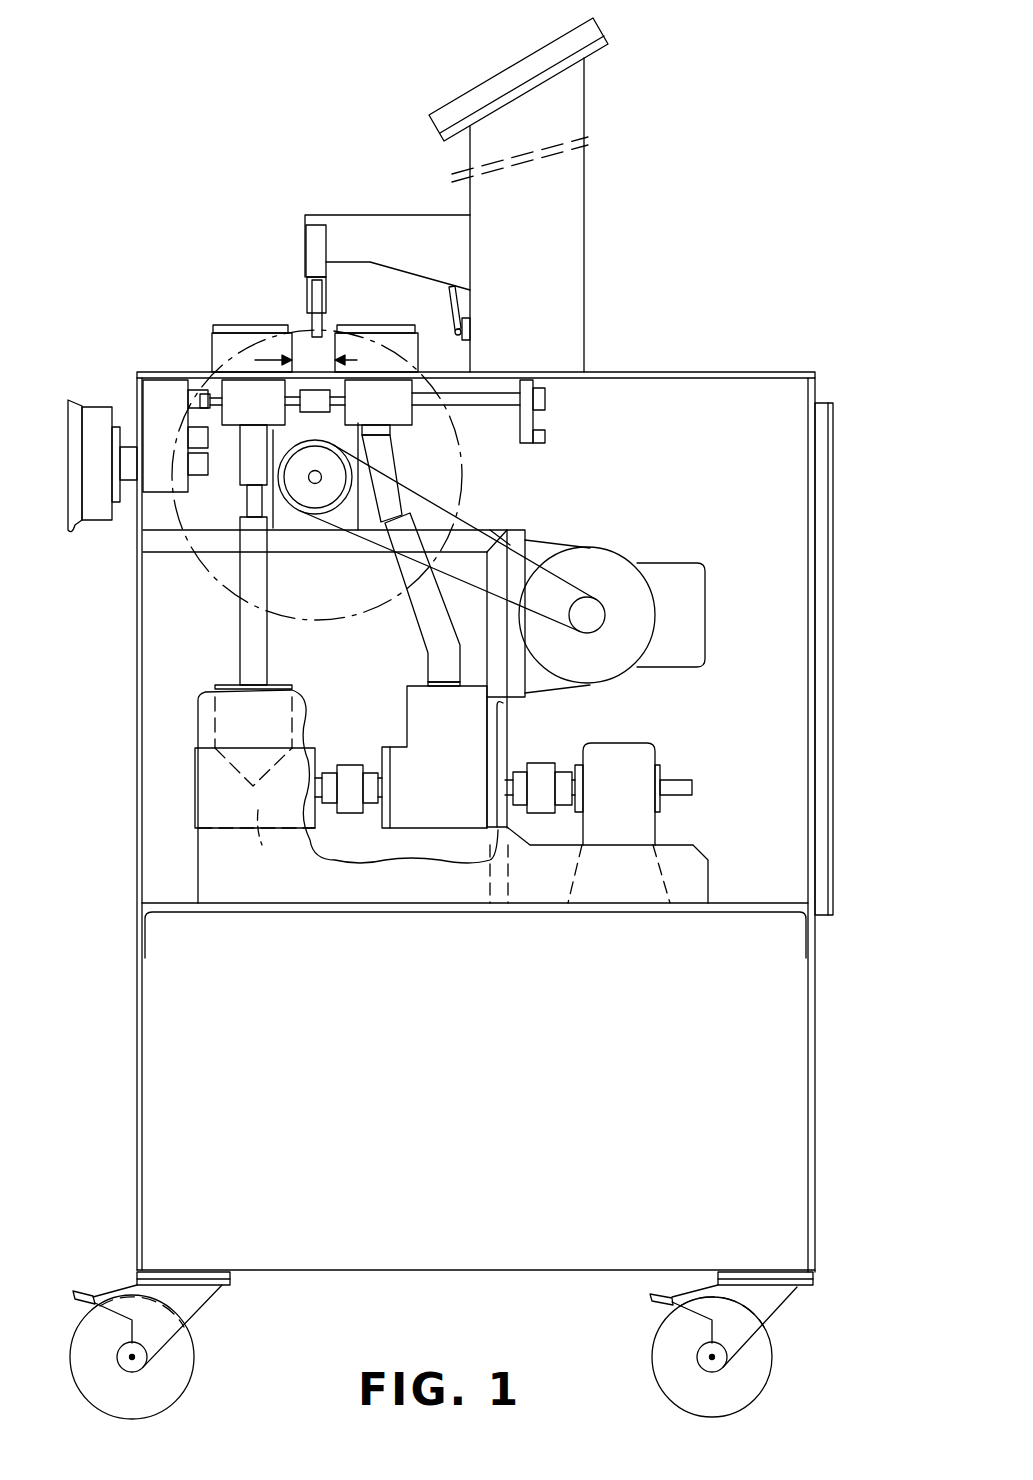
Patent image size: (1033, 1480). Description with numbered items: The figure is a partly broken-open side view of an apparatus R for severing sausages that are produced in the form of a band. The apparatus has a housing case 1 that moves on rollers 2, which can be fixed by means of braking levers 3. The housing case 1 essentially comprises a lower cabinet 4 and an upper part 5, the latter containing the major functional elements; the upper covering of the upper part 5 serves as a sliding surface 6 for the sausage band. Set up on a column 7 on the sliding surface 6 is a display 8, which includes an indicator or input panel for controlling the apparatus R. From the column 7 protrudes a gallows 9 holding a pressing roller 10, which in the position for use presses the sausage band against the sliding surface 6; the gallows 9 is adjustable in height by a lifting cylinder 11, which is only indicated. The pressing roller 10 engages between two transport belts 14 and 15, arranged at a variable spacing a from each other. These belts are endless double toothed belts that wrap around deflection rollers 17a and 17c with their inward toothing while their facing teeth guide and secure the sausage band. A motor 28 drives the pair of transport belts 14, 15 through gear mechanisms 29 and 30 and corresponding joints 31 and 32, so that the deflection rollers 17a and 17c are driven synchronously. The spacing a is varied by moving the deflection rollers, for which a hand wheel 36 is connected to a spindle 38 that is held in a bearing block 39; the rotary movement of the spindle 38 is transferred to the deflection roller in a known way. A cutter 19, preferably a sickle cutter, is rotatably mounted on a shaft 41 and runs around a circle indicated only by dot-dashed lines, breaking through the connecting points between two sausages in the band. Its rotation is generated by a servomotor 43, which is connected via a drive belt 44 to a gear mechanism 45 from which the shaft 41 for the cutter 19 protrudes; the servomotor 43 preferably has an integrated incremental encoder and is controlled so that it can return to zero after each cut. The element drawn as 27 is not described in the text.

The housing case 1 is at (716, 371).
The apparatus R is at (698, 235).
The rollers 2 is at (185, 1350).
The braking levers 3 is at (73, 1305).
The lower cabinet 4 is at (818, 1084).
The upper part 5 is at (820, 385).
The sliding surface 6 is at (608, 372).
The column 7 is at (566, 228).
The display 8 is at (598, 40).
The gallows 9 is at (398, 233).
The pressing roller 10 is at (318, 318).
The lifting cylinder 11 is at (450, 296).
The transport belt 14 is at (220, 348).
The transport belt 15 is at (420, 345).
The deflection roller 17a is at (242, 330).
The deflection roller 17c is at (375, 327).
The spacing a is at (315, 357).
The cutter 19 is at (465, 474).
The gear housing 27 is at (152, 393).
The motor 28 is at (645, 756).
The gear mechanism 29 is at (346, 796).
The gear mechanism 30 is at (442, 810).
The joint 31 is at (240, 580).
The joint 32 is at (410, 563).
The hand wheel 36 is at (77, 515).
The spindle 38 is at (488, 403).
The bearing block 39 is at (546, 432).
The shaft 41 is at (315, 485).
The servomotor 43 is at (680, 578).
The drive belt 44 is at (520, 540).
The gear mechanism 45 is at (350, 514).